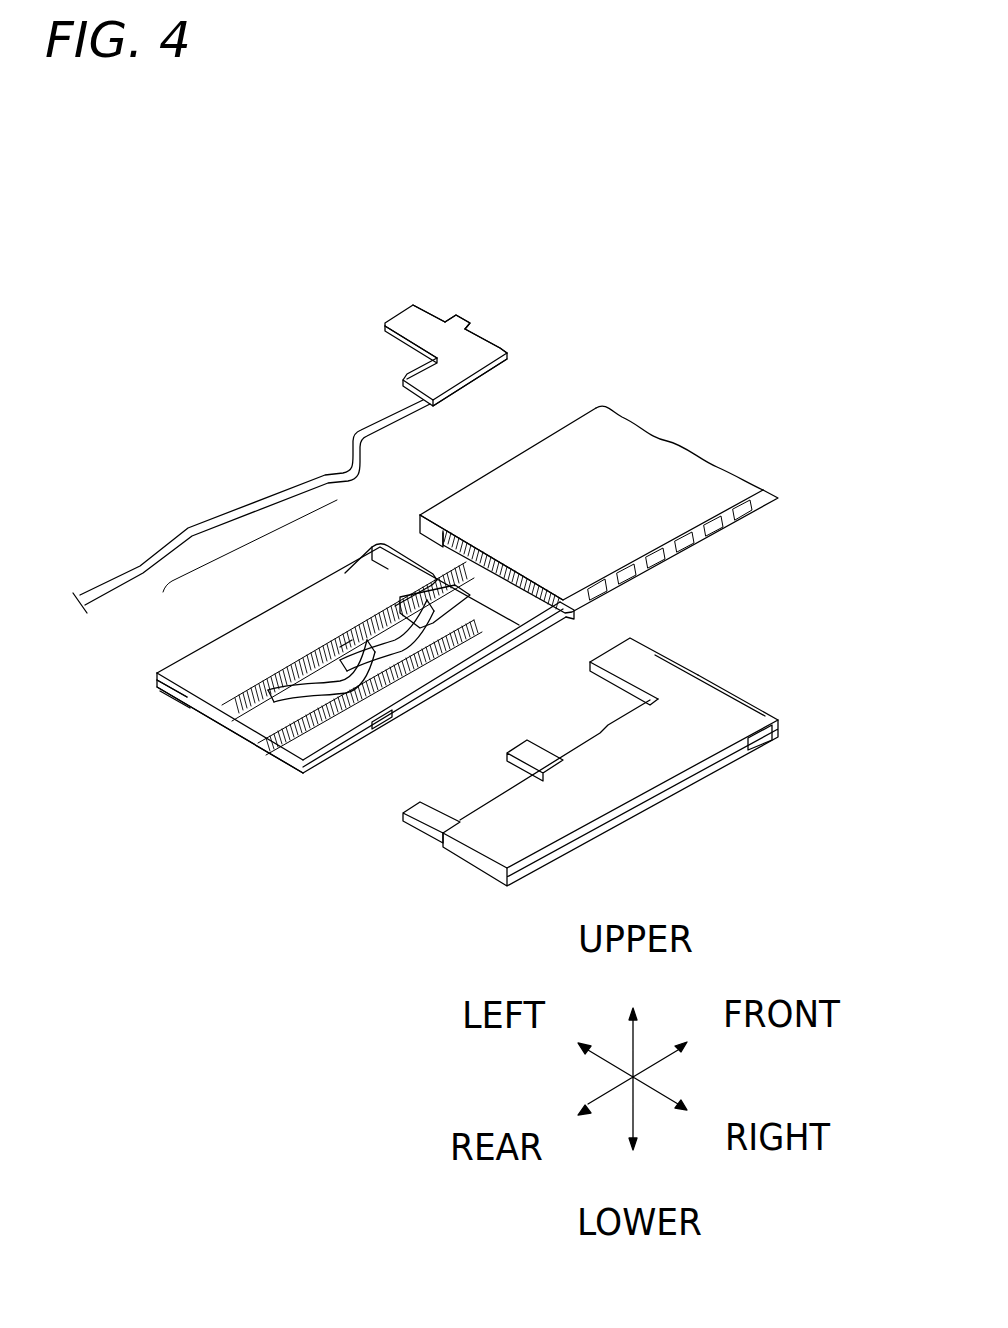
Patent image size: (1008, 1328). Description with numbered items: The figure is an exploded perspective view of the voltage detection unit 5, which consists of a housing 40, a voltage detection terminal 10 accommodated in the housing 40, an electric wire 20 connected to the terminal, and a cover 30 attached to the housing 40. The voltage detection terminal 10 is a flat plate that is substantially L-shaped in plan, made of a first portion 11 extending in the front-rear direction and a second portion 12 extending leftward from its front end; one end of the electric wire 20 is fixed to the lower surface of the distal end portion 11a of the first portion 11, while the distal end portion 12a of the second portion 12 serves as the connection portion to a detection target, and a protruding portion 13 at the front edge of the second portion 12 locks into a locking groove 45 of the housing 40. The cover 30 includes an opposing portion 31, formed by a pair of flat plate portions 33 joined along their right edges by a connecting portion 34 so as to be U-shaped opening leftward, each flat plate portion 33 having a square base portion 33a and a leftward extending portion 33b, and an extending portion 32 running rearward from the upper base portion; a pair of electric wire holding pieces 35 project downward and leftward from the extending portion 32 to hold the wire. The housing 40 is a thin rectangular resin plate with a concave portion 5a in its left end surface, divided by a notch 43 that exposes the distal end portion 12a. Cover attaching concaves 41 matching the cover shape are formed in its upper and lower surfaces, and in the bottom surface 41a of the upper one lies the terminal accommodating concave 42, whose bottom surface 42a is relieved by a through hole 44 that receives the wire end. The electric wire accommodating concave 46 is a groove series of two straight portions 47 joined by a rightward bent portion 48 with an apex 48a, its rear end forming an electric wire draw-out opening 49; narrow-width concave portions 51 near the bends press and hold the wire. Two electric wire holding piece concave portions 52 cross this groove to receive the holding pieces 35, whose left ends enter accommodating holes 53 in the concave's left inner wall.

The voltage detection unit 5 is at (637, 312).
The concave portion 5a is at (418, 543).
The voltage detection terminal 10 is at (445, 318).
The first portion 11 is at (503, 344).
The distal end portion 11a is at (437, 385).
The second portion 12 is at (410, 348).
The distal end portion 12a is at (404, 306).
The protruding portion 13 is at (470, 313).
The electric wire 20 is at (207, 515).
The cover 30 is at (621, 720).
The opposing portion 31 is at (861, 740).
The extending portion 32 is at (598, 796).
The flat plate portions 33 is at (693, 741).
The base portion 33a is at (705, 718).
The extending portion 33b is at (637, 662).
The connecting portion 34 is at (727, 758).
The electric wire holding pieces 35 is at (410, 808).
The housing 40 is at (534, 598).
The cover attaching concaves 41 is at (534, 607).
The bottom surface 41a is at (503, 598).
The terminal accommodating concave 42 is at (591, 503).
The bottom surface 42a is at (468, 573).
The notch 43 is at (393, 540).
The through hole 44 is at (370, 550).
The locking groove 45 is at (447, 570).
The electric wire accommodating concave 46 is at (252, 534).
The straight portions 47 is at (380, 627).
The bent portion 48 is at (331, 623).
The apex 48a is at (382, 720).
The electric wire draw-out opening 49 is at (233, 740).
The narrow-width concave portions 51 is at (340, 650).
The electric wire holding piece concave portions 52 is at (273, 748).
The accommodating holes 53 is at (343, 653).